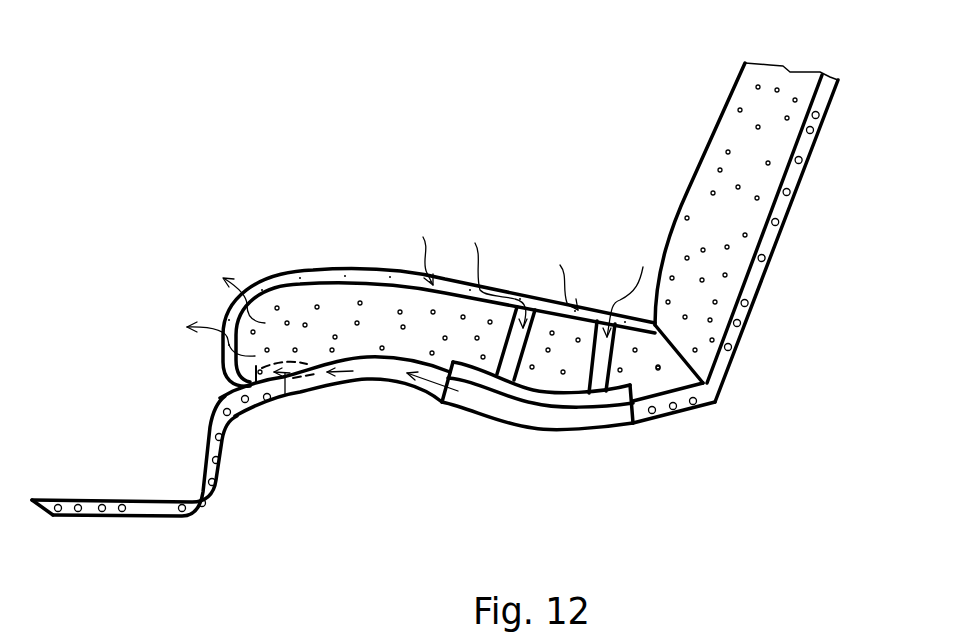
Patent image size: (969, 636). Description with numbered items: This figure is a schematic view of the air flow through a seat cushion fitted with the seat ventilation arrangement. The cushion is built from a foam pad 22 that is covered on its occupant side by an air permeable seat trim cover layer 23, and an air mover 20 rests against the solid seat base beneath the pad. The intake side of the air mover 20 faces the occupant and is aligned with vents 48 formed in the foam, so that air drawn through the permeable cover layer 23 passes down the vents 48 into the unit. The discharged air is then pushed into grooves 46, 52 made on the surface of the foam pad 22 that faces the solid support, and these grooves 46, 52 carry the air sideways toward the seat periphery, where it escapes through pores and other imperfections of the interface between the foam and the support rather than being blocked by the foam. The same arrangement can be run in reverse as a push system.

The air mover configuration 20 is at (532, 440).
The foam pad 22 is at (297, 307).
The air permeable seat trim cover layer 23 is at (350, 277).
The grooves 46 is at (373, 436).
The vents 48 is at (537, 297).
The seat pan support portion 52 is at (368, 368).